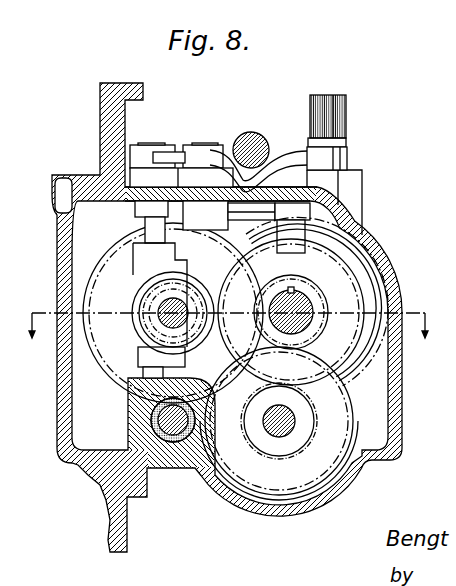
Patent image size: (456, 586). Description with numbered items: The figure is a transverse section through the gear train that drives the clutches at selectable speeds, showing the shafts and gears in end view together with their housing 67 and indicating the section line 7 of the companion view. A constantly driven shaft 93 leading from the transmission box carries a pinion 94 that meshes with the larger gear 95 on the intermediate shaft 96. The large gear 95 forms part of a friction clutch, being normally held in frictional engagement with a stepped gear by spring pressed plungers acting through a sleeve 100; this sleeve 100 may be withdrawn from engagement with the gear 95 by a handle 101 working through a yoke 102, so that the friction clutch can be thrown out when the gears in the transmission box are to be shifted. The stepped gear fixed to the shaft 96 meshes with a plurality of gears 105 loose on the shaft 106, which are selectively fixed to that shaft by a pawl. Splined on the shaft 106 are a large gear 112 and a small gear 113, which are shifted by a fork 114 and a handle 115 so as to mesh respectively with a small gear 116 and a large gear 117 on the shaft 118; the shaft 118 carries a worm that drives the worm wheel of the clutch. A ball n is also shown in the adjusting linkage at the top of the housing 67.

The gear housing 67 is at (400, 279).
The fork 114 is at (310, 212).
The constantly driven shaft 93 is at (167, 420).
The pinion 94 is at (163, 433).
The large gear 95 is at (113, 370).
The yoke 102 is at (120, 295).
The intermediate shaft 96 is at (178, 300).
The ball n is at (255, 132).
The handle 101 is at (346, 108).
The handle 115 is at (320, 100).
The large gear 112 is at (335, 258).
The gears 105 is at (357, 262).
The sleeve 100 is at (227, 278).
The small gear 113 is at (322, 328).
The shaft 106 is at (308, 300).
The large gear 117 is at (353, 398).
The small gear 116 is at (305, 407).
The shaft 118 is at (278, 435).
The section line 7- 7 is at (226, 321).